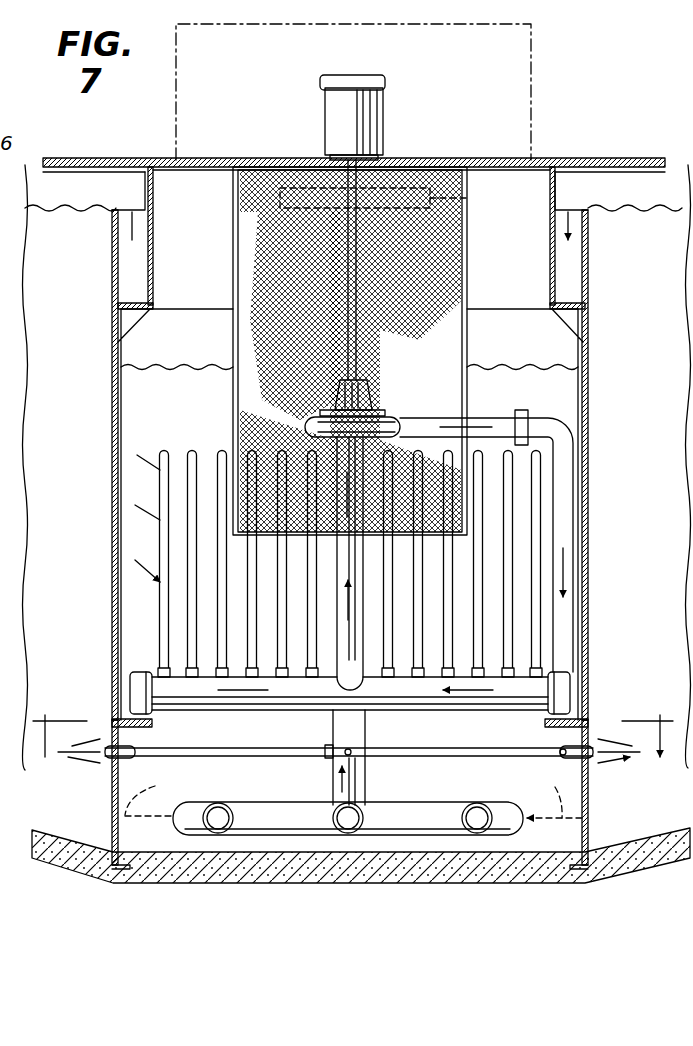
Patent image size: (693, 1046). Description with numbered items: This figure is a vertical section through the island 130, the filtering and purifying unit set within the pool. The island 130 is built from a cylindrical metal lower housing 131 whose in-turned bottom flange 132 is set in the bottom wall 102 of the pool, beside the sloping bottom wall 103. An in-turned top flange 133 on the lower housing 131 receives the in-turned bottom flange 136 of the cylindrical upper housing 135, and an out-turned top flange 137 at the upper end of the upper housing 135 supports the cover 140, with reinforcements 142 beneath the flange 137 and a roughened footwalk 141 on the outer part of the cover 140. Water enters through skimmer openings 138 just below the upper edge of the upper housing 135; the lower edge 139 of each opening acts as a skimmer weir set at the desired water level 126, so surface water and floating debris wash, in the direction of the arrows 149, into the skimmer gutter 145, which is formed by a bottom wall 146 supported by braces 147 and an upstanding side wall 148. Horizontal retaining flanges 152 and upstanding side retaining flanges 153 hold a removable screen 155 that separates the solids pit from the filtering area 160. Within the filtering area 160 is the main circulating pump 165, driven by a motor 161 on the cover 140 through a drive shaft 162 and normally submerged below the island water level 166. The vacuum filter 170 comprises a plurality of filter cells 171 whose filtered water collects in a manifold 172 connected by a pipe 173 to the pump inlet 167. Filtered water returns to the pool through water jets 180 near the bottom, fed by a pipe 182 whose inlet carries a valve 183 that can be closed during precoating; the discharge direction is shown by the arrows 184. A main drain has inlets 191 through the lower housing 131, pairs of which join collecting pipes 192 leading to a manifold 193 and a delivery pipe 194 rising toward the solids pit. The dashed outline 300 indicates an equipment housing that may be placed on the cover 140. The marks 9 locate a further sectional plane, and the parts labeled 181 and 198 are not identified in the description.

The bottom wall 102 is at (262, 870).
The sloping bottom wall 103 is at (60, 858).
The water level 126 is at (665, 210).
The island 130 is at (605, 88).
The lower housing 131 is at (112, 808).
The bottom flange 132 is at (124, 869).
The top flange 133 is at (140, 729).
The upper housing 135 is at (112, 596).
The bottom flange 136 is at (128, 692).
The top flange 137 is at (125, 201).
The skimmer openings 138 is at (172, 163).
The lower edge 139 is at (153, 200).
The cover 140 is at (460, 148).
The footwalk 141 is at (62, 162).
The reinforcements 142 is at (108, 167).
The skimmer gutter 145 is at (137, 258).
The bottom wall 146 is at (120, 322).
The braces 147 is at (140, 313).
The side wall 148 is at (153, 247).
The arrows 149 is at (128, 228).
The retaining flanges 152 is at (457, 530).
The side retaining flanges 153 is at (236, 405).
The removable screen 155 is at (268, 375).
The filtering area 160 is at (145, 460).
The motor 161 is at (385, 105).
The drive shaft 162 is at (392, 170).
The main circulating pump 165 is at (372, 425).
The water level 166 is at (163, 372).
The inlet 167 is at (345, 449).
The vacuum filter 170 is at (158, 535).
The filter cells 171 is at (220, 633).
The manifold 172 is at (433, 700).
The pipe 173 is at (358, 566).
The water jets 180 is at (107, 757).
The rod 181 is at (210, 758).
The pipe 182 is at (568, 466).
The valve 183 is at (528, 420).
The arrows 184 is at (88, 745).
The inlets 191 is at (175, 830).
The collecting pipes 192 is at (210, 835).
The manifold 193 is at (272, 815).
The delivery pipe 194 is at (366, 780).
The backwash flow 198 is at (353, 795).
The equipment housing 300 is at (536, 44).
The section line 9 is at (353, 724).